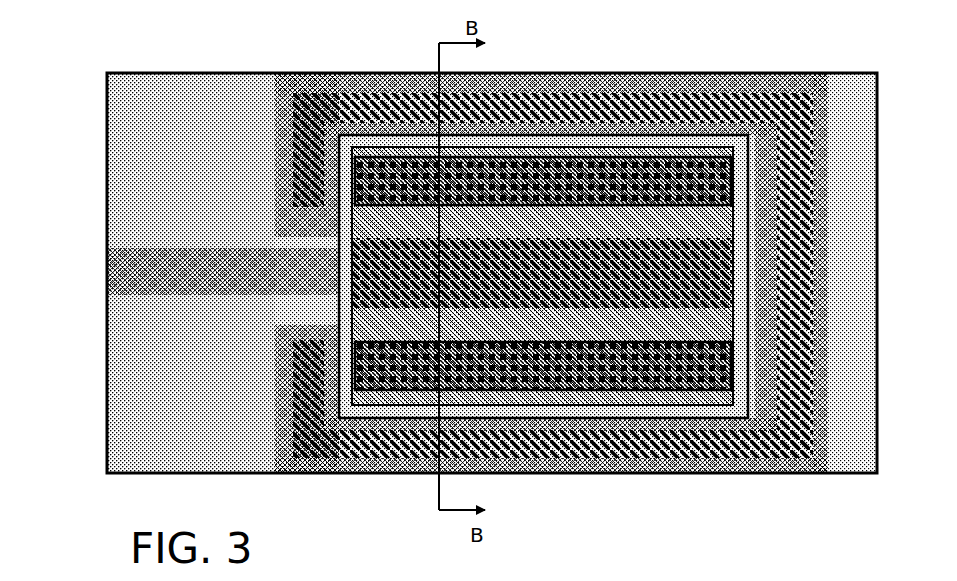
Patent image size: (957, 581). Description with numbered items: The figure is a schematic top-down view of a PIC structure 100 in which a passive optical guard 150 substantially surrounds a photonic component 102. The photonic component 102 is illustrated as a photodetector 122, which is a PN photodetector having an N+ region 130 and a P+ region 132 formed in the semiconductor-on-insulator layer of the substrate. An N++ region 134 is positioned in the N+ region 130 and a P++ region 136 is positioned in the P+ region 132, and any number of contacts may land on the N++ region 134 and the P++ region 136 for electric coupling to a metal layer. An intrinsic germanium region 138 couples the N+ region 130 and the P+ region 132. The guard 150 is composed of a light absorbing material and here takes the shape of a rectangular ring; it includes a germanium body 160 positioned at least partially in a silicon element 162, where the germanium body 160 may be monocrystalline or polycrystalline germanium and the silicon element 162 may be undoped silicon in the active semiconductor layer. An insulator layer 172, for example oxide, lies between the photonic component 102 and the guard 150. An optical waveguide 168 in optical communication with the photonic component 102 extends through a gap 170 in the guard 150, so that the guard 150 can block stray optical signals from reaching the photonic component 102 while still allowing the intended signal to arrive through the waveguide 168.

The PIC structure 100 is at (130, 97).
The photonic component 102 is at (338, 172).
The photodetector 122 is at (542, 208).
The N+ region 130 is at (408, 233).
The P+ region 132 is at (408, 322).
The N++ region 134 is at (522, 165).
The P++ region 136 is at (533, 392).
The germanium region 138 is at (558, 275).
The passive optical guard 150 is at (708, 72).
The germanium body 160 is at (604, 100).
The silicon element 162 is at (737, 128).
The optical waveguide 168 is at (215, 268).
The gap 170 is at (290, 232).
The insulator layer 172 is at (753, 357).